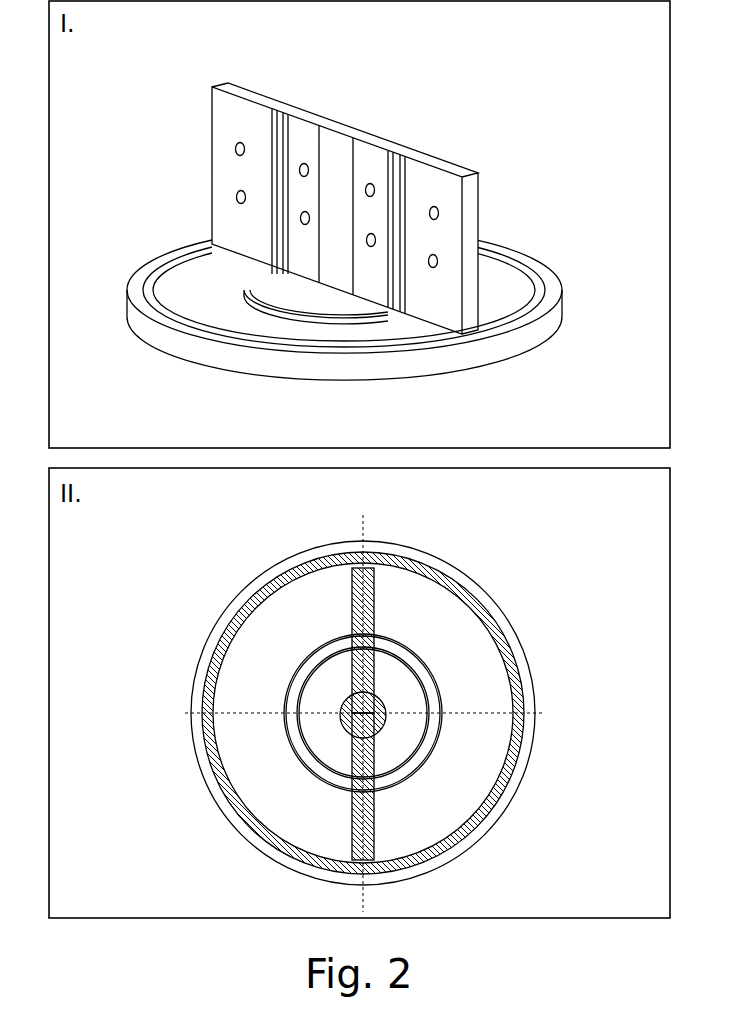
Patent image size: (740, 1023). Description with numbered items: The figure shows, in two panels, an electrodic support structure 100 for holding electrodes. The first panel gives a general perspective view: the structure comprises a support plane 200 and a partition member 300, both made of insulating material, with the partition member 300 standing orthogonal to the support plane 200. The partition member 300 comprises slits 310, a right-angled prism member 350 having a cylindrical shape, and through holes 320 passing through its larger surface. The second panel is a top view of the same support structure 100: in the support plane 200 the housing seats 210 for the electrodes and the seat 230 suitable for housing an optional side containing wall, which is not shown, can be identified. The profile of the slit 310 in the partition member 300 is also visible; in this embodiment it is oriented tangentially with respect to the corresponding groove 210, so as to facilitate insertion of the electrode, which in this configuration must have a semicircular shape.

The electrodic support structure 100 is at (358, 70).
The support plane 200 is at (520, 250).
The housing seats 210 is at (425, 691).
The seat 230 is at (462, 580).
The partition member 300 is at (472, 172).
The slits 310 is at (283, 121).
The through holes 320 is at (237, 198).
The right-angled prism member 350 is at (370, 132).